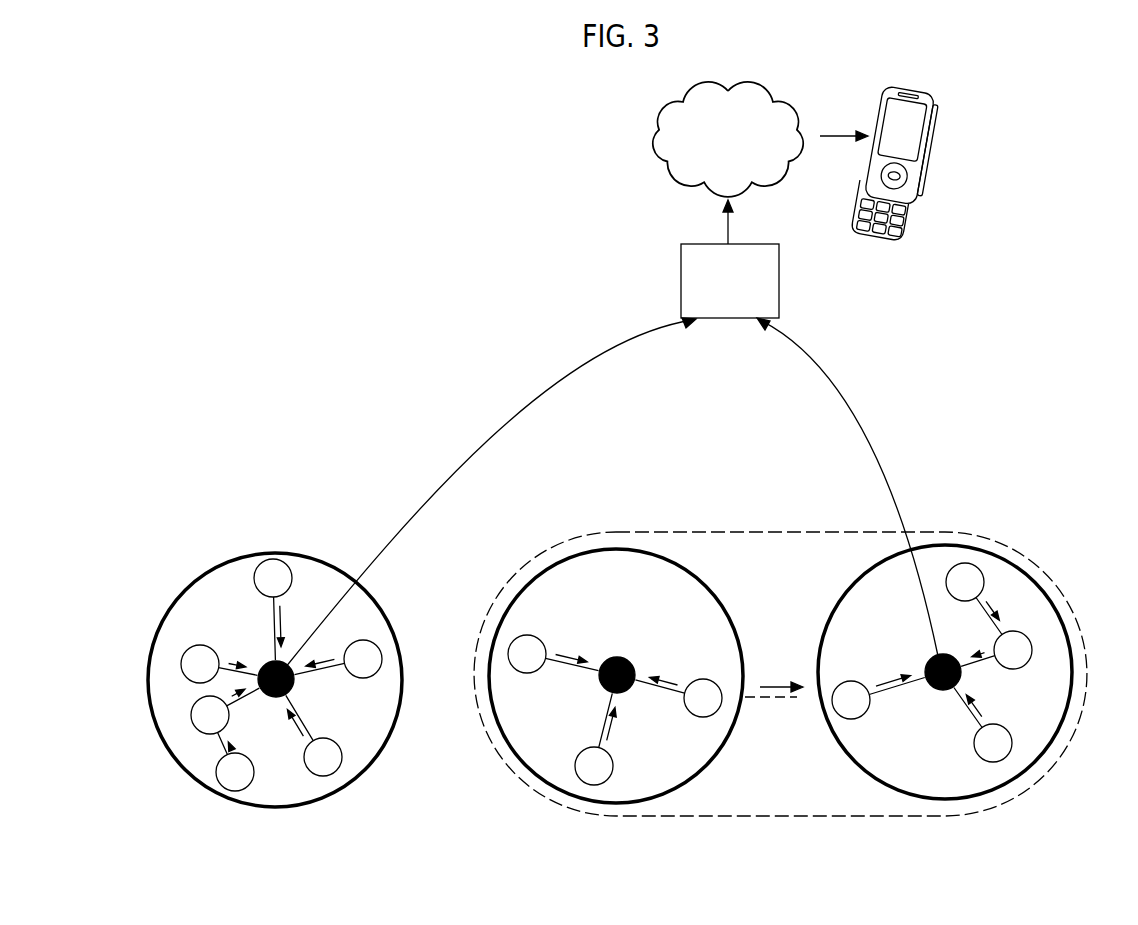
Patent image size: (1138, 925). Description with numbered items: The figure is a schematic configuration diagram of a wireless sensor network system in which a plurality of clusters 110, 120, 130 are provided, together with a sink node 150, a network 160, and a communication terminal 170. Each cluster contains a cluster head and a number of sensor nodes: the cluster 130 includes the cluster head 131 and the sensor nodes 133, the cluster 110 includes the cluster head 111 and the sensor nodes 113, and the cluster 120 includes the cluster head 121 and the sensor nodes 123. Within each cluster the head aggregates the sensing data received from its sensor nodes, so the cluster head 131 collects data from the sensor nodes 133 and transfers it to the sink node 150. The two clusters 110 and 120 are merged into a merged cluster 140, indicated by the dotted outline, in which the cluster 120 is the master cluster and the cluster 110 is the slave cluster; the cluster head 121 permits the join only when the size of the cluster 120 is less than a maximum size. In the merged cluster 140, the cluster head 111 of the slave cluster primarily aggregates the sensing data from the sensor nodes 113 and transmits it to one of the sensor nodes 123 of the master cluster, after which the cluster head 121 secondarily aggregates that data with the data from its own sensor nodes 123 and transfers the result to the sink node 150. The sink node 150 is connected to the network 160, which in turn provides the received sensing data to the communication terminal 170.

The cluster 110 is at (620, 805).
The cluster head 111 is at (613, 657).
The sensor nodes 113 is at (719, 686).
The cluster 120 is at (945, 800).
The cluster head 121 is at (937, 692).
The sensor nodes 123 is at (858, 682).
The cluster 130 is at (280, 808).
The cluster head 131 is at (276, 697).
The sensor nodes 133 is at (188, 655).
The merged cluster 140 is at (790, 818).
The sink node 150 is at (779, 278).
The network 160 is at (670, 177).
The communication terminal 170 is at (915, 88).